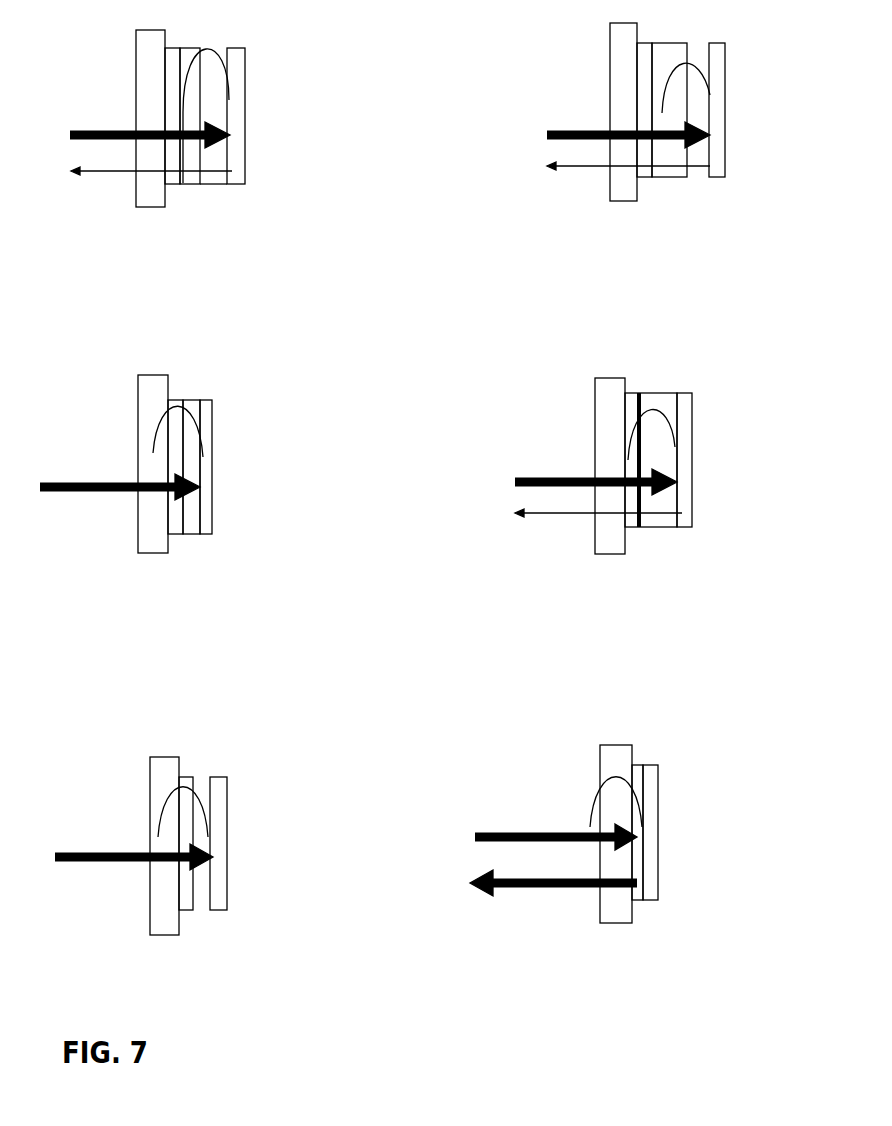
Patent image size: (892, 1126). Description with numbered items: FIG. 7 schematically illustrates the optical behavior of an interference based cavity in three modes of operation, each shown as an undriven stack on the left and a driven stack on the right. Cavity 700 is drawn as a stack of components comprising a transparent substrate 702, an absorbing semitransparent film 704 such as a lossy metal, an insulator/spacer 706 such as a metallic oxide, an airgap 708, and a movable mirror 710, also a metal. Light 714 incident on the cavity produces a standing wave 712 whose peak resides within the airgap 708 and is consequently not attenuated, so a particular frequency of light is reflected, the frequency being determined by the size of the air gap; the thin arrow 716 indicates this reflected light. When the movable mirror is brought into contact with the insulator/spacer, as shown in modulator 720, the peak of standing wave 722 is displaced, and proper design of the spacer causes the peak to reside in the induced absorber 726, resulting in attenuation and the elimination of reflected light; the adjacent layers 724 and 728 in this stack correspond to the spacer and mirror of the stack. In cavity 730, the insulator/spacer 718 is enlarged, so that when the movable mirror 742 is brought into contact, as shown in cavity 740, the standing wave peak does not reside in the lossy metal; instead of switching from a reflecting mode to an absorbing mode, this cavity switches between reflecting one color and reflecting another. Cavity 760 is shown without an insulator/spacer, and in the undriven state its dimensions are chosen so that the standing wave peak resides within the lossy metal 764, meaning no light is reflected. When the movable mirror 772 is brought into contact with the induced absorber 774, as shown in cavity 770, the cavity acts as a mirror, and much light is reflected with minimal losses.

The cavity 700 is at (180, 428).
The transparent substrate 702 is at (148, 195).
The absorbing semitransparent film 704 is at (172, 185).
The insulator/spacer 706 is at (192, 183).
The airgap 708 is at (213, 183).
The movable mirror 710 is at (230, 182).
The standing wave 712 is at (210, 53).
The light 714 is at (100, 130).
The reflected light 716 is at (110, 173).
The insulator/spacer 718 is at (667, 177).
The modulator 720 is at (235, 482).
The standing wave 722 is at (197, 418).
The middle layer 724 is at (193, 400).
The induced absorber 726 is at (180, 535).
The outer layer 728 is at (210, 505).
The cavity 730 is at (381, 261).
The cavity 740 is at (667, 496).
The movable mirror 742 is at (700, 512).
The cavity 760 is at (175, 880).
The lossy metal 764 is at (190, 910).
The cavity 770 is at (613, 849).
The movable mirror 772 is at (658, 787).
The induced absorber 774 is at (637, 763).